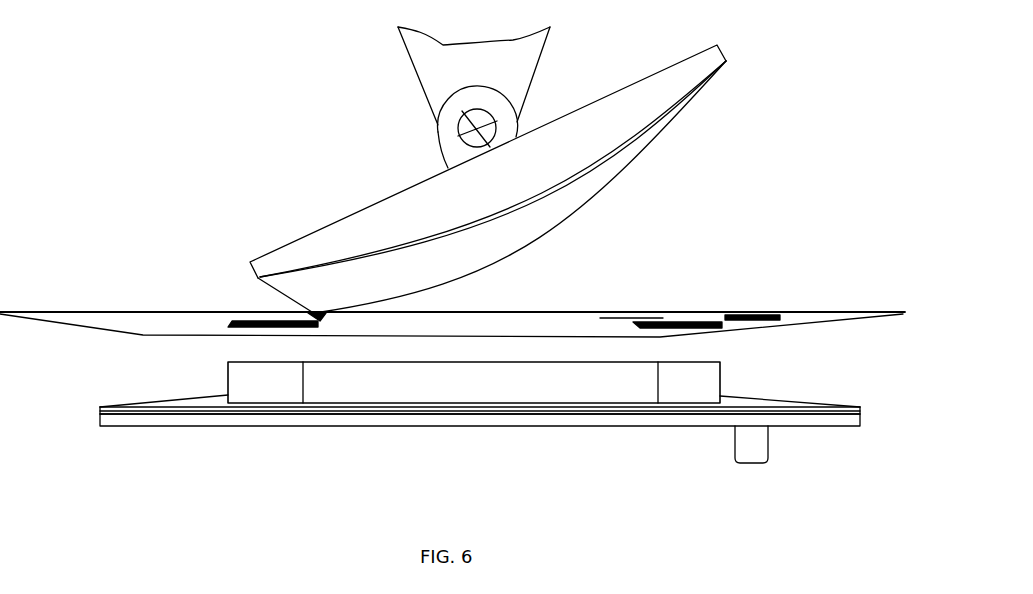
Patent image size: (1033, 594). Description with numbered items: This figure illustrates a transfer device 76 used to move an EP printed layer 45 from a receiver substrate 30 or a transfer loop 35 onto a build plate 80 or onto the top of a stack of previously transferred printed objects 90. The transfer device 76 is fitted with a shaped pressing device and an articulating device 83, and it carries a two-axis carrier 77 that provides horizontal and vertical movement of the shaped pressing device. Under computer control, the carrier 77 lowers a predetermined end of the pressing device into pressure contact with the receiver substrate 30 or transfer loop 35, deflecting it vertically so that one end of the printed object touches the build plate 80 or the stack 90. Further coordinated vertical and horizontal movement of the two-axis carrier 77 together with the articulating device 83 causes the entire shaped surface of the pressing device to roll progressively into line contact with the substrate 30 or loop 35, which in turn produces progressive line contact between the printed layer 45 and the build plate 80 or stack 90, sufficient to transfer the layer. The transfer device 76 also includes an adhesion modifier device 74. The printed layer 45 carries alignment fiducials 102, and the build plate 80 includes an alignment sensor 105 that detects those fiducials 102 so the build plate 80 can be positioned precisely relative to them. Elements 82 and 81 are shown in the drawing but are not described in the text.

The transfer device 76 is at (332, 97).
The two-axis carrier 77 is at (418, 68).
The articulating device 83 is at (470, 130).
The pressing shoe 82 is at (337, 233).
The adhesion modifier device 74 is at (627, 150).
The receiver substrate 30 is at (452, 350).
The transfer loop 35 is at (105, 315).
The EP printed layer 45 is at (245, 331).
The alignment fiducial 102 is at (757, 320).
The stack of previously transferred printed objects 90 is at (230, 378).
The upper plate 81 is at (467, 414).
The build plate 80 is at (650, 421).
The alignment sensor 105 is at (766, 447).